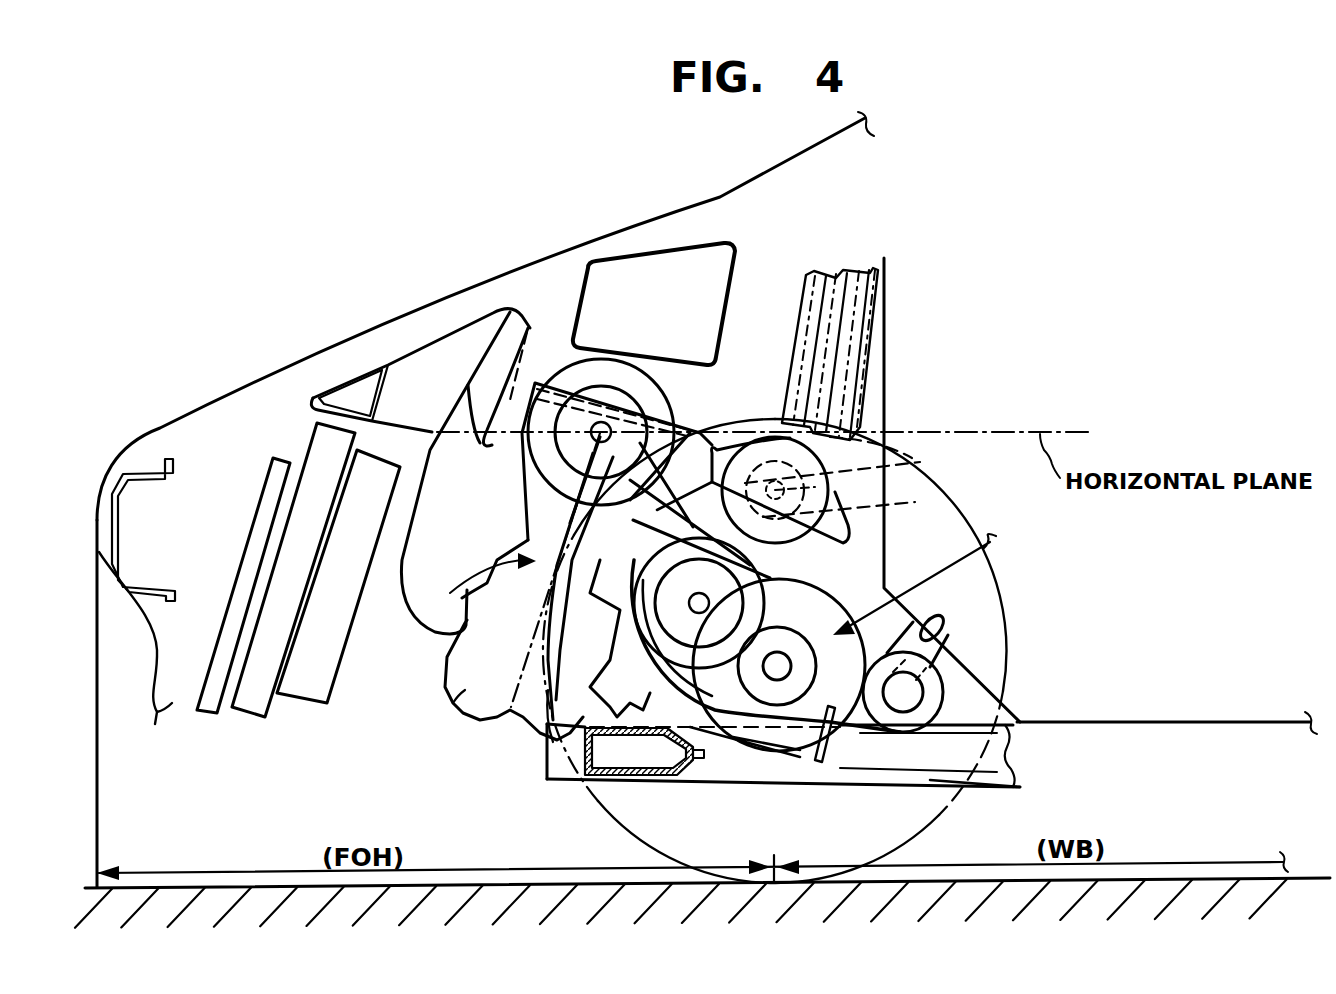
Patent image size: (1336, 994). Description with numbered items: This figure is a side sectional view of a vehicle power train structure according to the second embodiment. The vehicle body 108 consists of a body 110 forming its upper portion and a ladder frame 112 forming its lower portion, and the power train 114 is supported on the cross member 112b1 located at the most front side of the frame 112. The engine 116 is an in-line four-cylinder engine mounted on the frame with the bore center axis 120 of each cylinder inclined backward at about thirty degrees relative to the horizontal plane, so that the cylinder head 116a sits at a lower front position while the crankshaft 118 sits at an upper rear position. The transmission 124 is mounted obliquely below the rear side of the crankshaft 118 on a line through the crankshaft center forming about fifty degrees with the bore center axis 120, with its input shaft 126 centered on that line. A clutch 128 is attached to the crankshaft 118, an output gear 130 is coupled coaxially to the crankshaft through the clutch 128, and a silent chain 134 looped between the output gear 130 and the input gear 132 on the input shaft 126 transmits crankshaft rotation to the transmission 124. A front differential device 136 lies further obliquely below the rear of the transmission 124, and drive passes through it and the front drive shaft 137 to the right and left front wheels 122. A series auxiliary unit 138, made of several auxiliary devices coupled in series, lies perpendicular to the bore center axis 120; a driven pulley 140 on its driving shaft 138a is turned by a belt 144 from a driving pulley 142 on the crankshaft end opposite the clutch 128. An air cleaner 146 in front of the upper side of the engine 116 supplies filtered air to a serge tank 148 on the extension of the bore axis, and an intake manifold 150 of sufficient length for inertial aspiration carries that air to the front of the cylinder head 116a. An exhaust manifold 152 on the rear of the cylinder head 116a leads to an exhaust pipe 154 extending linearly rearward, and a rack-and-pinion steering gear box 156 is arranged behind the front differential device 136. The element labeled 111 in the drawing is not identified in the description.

The vehicle body 108 is at (620, 203).
The body 110 is at (525, 262).
The engine 111 is at (1130, 368).
The ladder frame 112 is at (1035, 756).
The cross member 112b1 is at (645, 775).
The power train 114 is at (760, 336).
The engine 116 is at (432, 620).
The cylinder head 116a is at (461, 698).
The crankshaft 118 is at (618, 400).
The bore center axis 120 is at (497, 718).
The front wheels 122 is at (585, 785).
The transmission 124 is at (752, 570).
The input shaft 126 is at (770, 580).
The clutch 128 is at (615, 372).
The output gear 130 is at (534, 465).
The input gear 132 is at (684, 577).
The silent chain 134 is at (602, 592).
The front differential device 136 is at (983, 570).
The front drive shaft 137 is at (788, 675).
The series auxiliary unit 138 is at (826, 463).
The driving shaft 138a is at (869, 466).
The driven pulley 140 is at (915, 500).
The driving pulley 142 is at (581, 446).
The belt 144 is at (706, 440).
The air cleaner 146 is at (443, 353).
The serge tank 148 is at (720, 254).
The intake manifold 150 is at (436, 524).
The exhaust manifold 152 is at (757, 750).
The exhaust pipe 154 is at (987, 780).
The steering gear box 156 is at (960, 688).